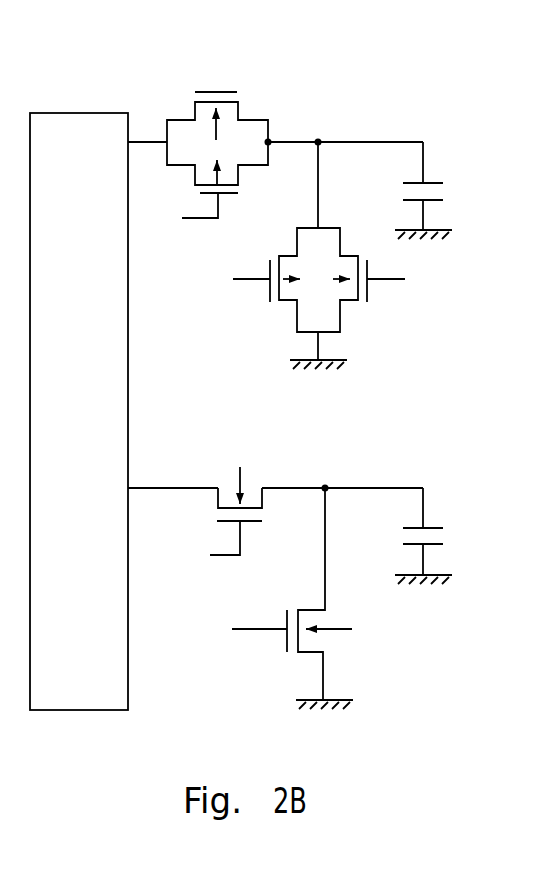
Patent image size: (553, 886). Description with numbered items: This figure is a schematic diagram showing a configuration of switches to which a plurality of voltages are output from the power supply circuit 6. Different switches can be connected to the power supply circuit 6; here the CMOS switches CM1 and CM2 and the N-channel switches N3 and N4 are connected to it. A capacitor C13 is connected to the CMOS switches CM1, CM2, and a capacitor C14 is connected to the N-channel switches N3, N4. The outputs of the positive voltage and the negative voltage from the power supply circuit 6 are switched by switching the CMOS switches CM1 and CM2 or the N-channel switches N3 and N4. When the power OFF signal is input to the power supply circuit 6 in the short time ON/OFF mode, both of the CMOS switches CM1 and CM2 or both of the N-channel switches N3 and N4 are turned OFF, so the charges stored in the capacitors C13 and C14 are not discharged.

The power supply circuit 6 is at (128, 655).
The CMOS switch CM1 is at (256, 91).
The CMOS switch CM2 is at (389, 299).
The capacitor C13 is at (452, 190).
The capacitor C14 is at (454, 534).
The N-channel switch N3 is at (259, 465).
The N-channel switch N4 is at (383, 631).